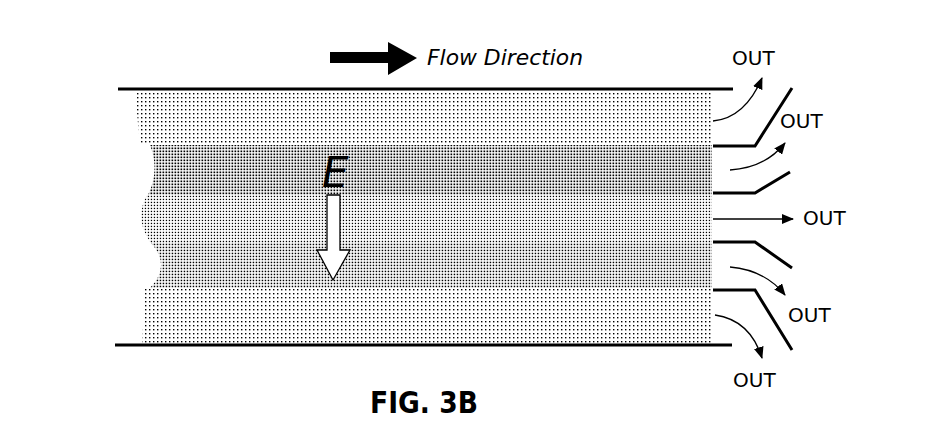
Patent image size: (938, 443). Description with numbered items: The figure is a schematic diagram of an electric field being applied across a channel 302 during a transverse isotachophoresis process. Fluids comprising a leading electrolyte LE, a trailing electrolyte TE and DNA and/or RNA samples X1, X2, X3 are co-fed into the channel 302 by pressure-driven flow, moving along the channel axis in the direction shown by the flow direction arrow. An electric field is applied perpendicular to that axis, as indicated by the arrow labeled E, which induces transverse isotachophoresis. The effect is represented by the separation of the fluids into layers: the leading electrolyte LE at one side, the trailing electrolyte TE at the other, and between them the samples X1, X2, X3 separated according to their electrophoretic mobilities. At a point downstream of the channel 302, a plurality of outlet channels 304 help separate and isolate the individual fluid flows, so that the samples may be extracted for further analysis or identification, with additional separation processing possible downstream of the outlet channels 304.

The channel 302 is at (272, 88).
The outlet channels 304 is at (785, 96).
The leading electrolyte LE is at (423, 118).
The first sample X1 is at (430, 170).
The second sample X2 is at (426, 218).
The third sample X3 is at (431, 265).
The trailing electrolyte TE is at (427, 315).